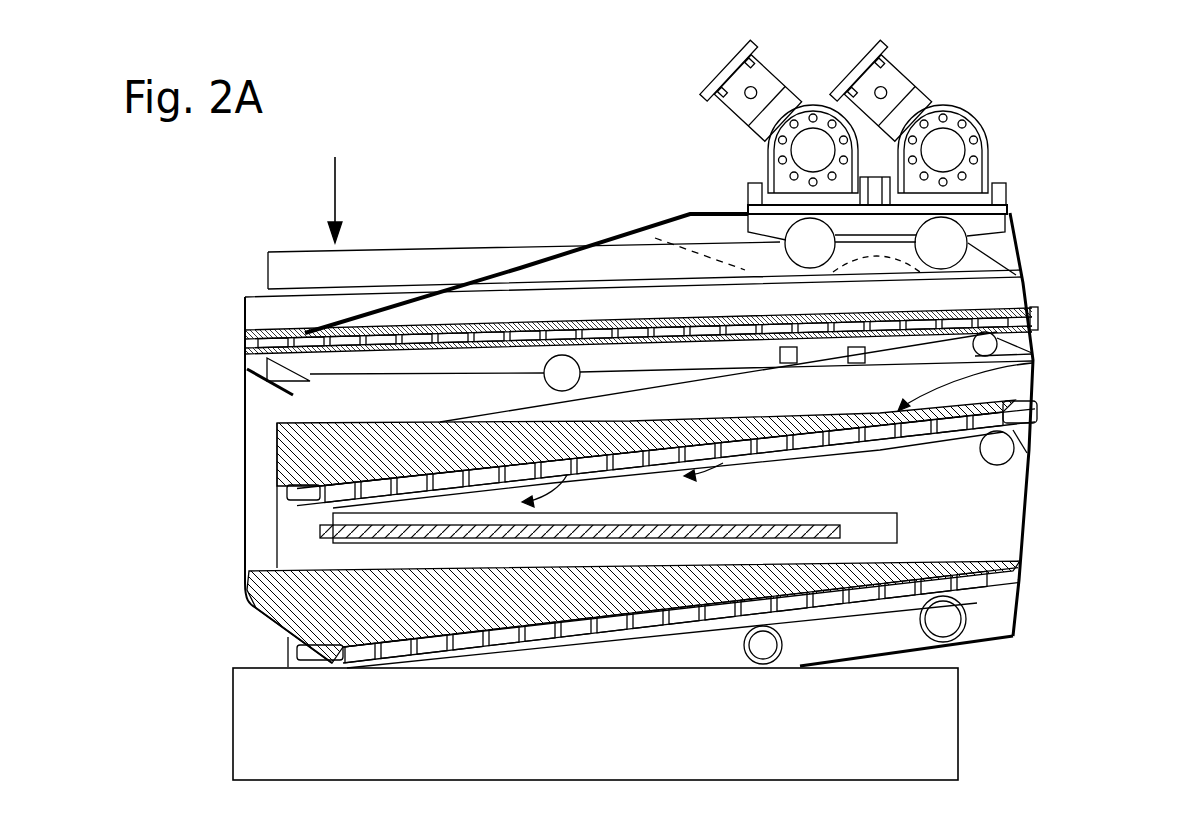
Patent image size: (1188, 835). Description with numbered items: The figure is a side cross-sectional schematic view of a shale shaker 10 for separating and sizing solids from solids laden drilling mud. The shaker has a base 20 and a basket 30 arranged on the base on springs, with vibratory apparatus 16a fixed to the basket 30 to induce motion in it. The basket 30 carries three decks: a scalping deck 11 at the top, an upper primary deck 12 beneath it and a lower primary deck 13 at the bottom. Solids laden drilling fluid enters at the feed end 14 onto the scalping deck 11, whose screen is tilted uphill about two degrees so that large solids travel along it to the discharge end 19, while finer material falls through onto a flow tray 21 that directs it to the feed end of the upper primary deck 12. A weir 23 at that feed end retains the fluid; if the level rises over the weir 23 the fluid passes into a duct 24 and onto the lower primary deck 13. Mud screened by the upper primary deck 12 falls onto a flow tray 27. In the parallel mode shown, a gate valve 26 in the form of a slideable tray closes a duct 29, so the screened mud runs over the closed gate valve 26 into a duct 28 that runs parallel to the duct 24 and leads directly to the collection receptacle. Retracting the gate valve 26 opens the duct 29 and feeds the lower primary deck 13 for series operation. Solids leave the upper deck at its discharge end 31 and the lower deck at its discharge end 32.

The shale shaker 10 is at (1040, 537).
The scalping deck 11 is at (556, 320).
The upper primary deck 12 is at (1035, 362).
The lower primary deck 13 is at (927, 553).
The feed end 14 is at (335, 187).
The vibratory apparatus 16a is at (943, 112).
The discharge end 19 is at (1033, 322).
The base 20 is at (715, 718).
The flow tray 21 is at (718, 372).
The weir 23 is at (257, 470).
The duct 24 is at (265, 487).
The gate valve 26 is at (580, 530).
The flow tray 27 is at (652, 482).
The duct 28 is at (247, 550).
The duct 29 is at (400, 550).
The basket 30 is at (1028, 468).
The discharge end of upper screen deck 31 is at (1037, 406).
The discharge end of lower screen deck 32 is at (1026, 578).